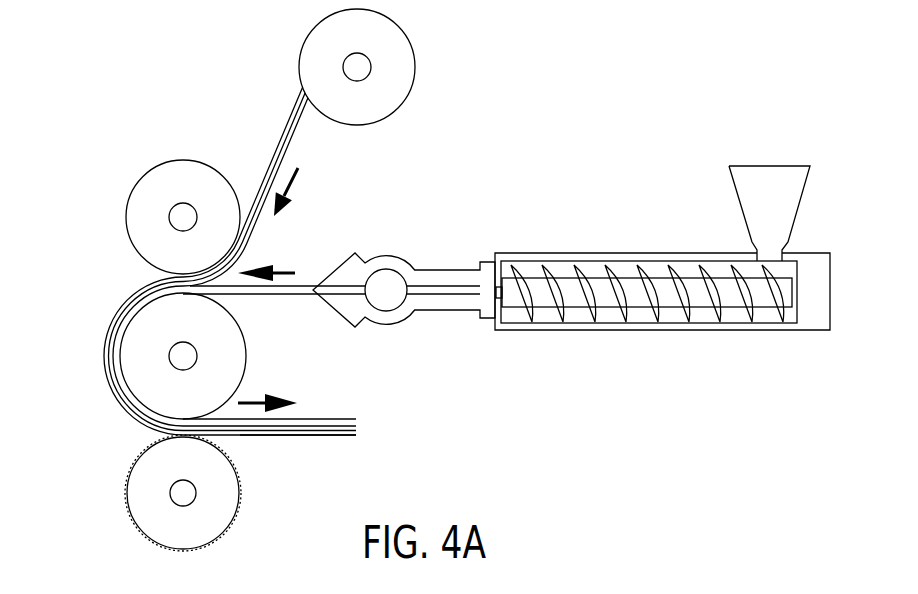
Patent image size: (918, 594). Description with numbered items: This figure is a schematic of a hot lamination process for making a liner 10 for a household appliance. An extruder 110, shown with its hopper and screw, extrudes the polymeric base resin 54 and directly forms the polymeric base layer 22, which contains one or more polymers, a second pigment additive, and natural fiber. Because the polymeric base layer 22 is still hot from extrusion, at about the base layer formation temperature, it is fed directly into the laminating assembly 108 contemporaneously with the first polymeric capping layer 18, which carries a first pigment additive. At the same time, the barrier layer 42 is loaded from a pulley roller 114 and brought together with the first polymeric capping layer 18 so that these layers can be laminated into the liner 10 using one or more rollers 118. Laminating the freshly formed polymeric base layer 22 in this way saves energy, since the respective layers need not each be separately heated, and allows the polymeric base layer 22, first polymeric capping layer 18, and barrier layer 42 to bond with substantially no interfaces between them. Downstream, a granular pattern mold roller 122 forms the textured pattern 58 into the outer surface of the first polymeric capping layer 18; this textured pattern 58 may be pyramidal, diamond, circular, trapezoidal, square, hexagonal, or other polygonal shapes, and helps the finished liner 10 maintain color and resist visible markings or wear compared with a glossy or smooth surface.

The laminating assembly 108 is at (82, 127).
The pulley roller 114 is at (397, 53).
The rollers 118 is at (128, 214).
The granular pattern mold roller 122 is at (138, 506).
The first polymeric capping layer 18 is at (285, 117).
The barrier layer 42 is at (292, 127).
The polymeric base layer 22 is at (258, 294).
The liner 10 is at (315, 410).
The textured pattern 58 is at (280, 436).
The polymeric base resin 54 is at (387, 279).
The extruder 110 is at (632, 331).